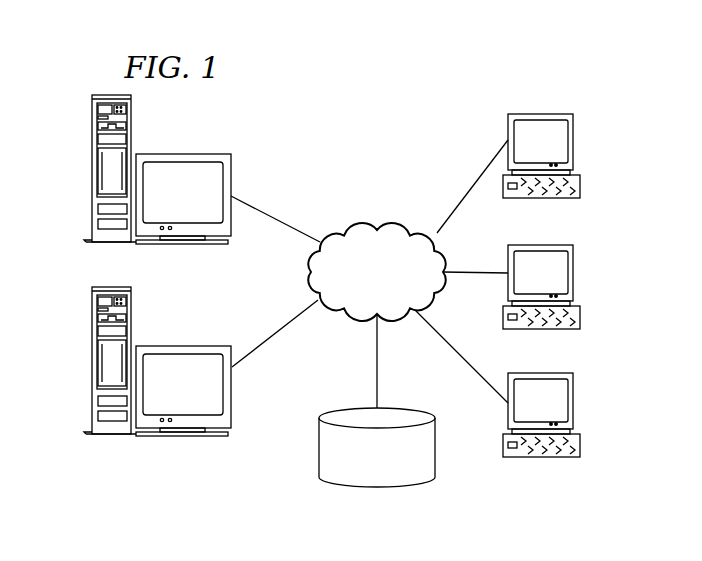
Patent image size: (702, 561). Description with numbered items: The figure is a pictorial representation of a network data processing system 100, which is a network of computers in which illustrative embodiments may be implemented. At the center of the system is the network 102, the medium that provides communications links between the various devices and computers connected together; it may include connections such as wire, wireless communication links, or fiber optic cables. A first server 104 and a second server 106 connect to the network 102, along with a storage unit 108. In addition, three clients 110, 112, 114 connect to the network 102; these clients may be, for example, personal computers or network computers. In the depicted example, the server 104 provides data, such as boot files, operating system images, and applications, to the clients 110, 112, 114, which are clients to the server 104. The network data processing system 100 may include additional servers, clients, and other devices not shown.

The network data processing system 100 is at (424, 121).
The network 102 is at (351, 222).
The server 104 is at (92, 168).
The server 106 is at (92, 360).
The storage unit 108 is at (362, 487).
The client 110 is at (574, 142).
The client 112 is at (574, 273).
The client 114 is at (574, 403).